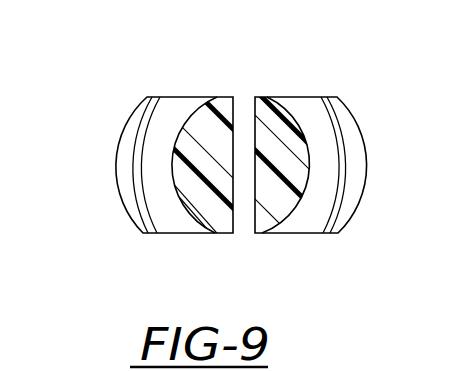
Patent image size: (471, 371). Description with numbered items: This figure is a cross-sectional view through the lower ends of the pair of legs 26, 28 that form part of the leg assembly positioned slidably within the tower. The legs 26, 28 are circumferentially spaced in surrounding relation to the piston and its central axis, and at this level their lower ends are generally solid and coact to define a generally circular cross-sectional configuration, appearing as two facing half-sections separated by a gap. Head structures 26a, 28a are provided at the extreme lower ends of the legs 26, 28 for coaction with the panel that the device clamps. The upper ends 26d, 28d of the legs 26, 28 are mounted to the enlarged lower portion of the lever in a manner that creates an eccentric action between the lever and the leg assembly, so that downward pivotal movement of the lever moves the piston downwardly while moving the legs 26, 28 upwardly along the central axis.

The leg 26 is at (148, 138).
The head structure 26a is at (135, 201).
The upper end of leg 26d is at (175, 180).
The leg 28 is at (341, 169).
The head structure 28a is at (340, 218).
The upper end of leg 28d is at (345, 137).